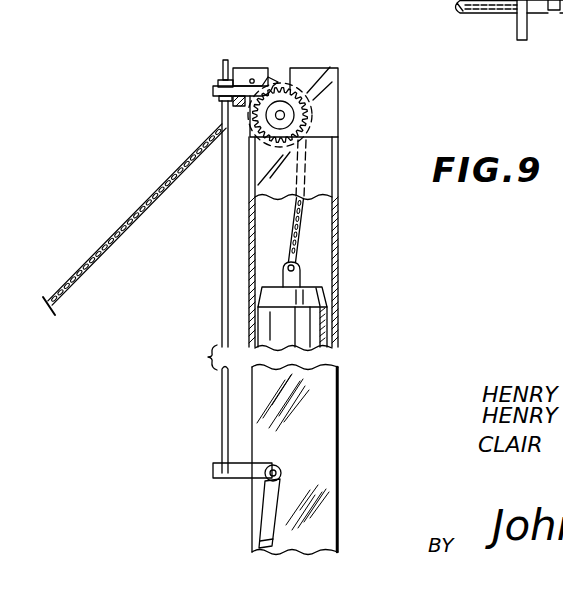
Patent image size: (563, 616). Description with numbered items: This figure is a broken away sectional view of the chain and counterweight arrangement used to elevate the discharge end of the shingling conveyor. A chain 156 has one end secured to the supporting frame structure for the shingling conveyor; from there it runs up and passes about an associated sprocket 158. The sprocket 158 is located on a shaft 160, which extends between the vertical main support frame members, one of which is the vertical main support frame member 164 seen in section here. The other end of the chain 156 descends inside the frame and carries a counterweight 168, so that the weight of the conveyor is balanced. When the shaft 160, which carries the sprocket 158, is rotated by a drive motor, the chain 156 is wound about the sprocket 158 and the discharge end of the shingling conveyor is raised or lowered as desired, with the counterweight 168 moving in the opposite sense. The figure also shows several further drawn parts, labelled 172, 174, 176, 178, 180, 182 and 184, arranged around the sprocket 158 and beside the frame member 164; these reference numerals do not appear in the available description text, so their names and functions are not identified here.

The chain 156 is at (140, 210).
The sprocket 158 is at (312, 147).
The shaft 160 is at (285, 114).
The vertical main support frame member 164 is at (339, 245).
The counterweight 168 is at (318, 325).
The housing 172 is at (298, 93).
The bracket 174 is at (252, 78).
The lever 176 is at (270, 510).
The arm 178 is at (240, 468).
The rod 180 is at (226, 412).
The pawl 182 is at (236, 104).
The pin 184 is at (251, 79).